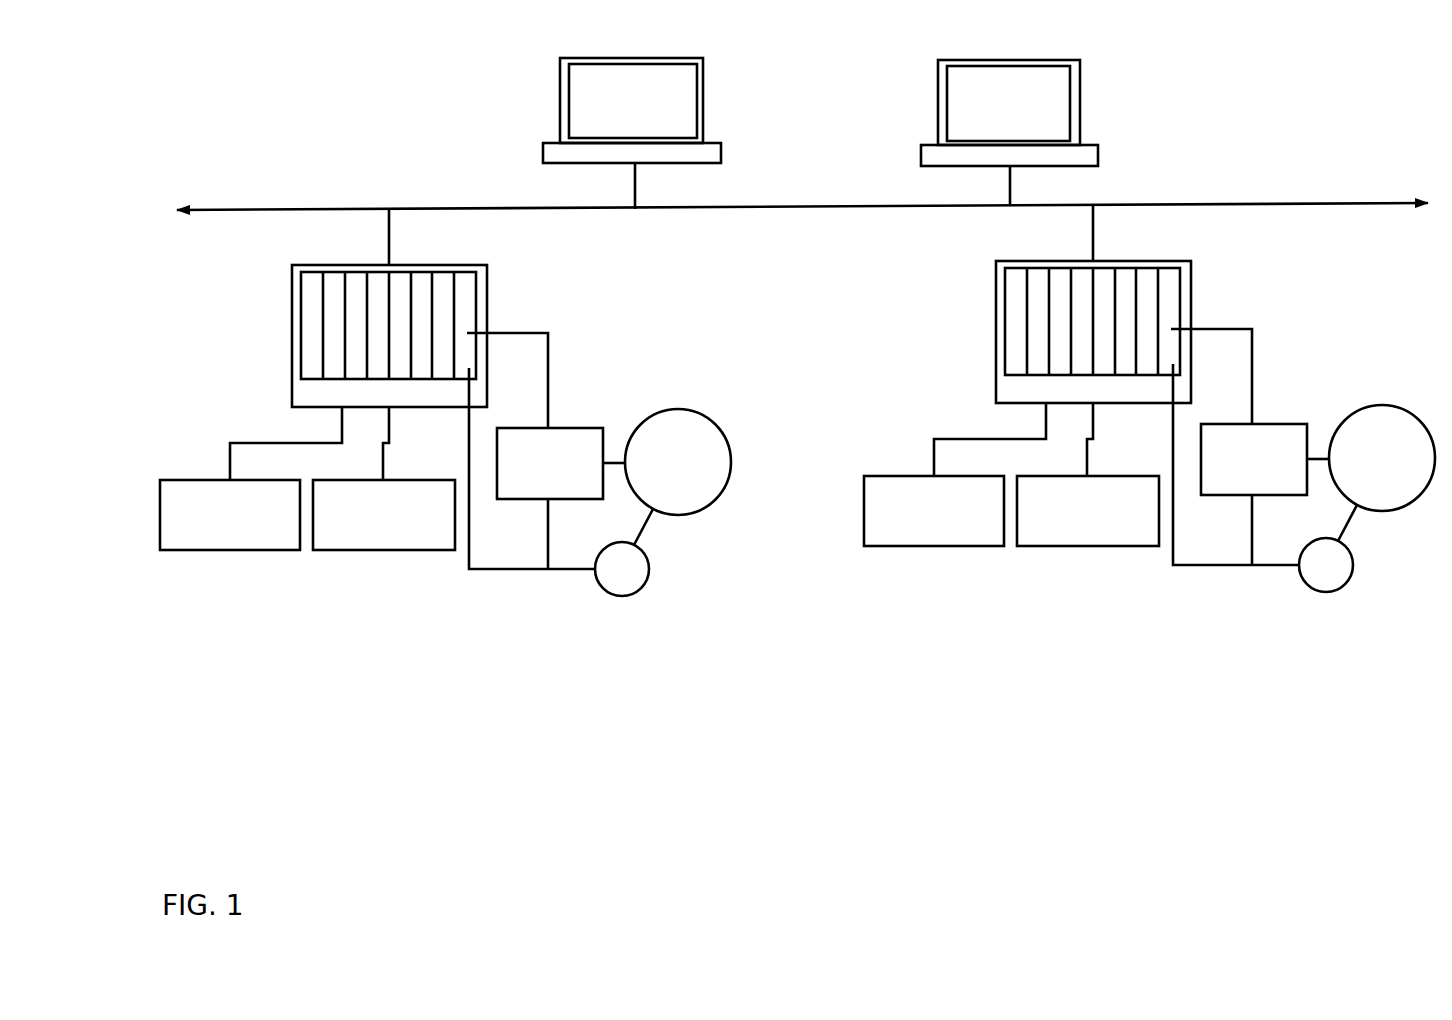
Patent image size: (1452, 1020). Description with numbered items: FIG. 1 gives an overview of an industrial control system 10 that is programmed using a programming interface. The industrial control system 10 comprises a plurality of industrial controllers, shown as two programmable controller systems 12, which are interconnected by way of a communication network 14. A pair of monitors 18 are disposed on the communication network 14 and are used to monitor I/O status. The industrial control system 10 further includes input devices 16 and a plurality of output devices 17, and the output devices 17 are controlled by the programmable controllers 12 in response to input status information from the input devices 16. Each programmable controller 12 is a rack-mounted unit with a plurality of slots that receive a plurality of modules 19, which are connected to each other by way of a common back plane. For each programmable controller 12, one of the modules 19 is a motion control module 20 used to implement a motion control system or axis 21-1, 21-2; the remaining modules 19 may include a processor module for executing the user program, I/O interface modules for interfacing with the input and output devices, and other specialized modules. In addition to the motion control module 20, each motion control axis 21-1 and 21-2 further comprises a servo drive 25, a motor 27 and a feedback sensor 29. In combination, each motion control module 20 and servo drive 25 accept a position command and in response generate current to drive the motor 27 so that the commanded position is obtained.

The industrial control system 10 is at (283, 140).
The programmable controller system 12 is at (292, 317).
The communication network 14 is at (487, 207).
The input devices 16 is at (196, 552).
The output devices 17 is at (352, 552).
The monitor 18 is at (705, 83).
The modules 19 is at (345, 280).
The motion control module 20 is at (467, 291).
The motion control axis 21-1 is at (483, 650).
The motion control axis 21-2 is at (1262, 628).
The servo drive 25 is at (577, 428).
The motor 27 is at (705, 410).
The feedback sensor 29 is at (650, 570).